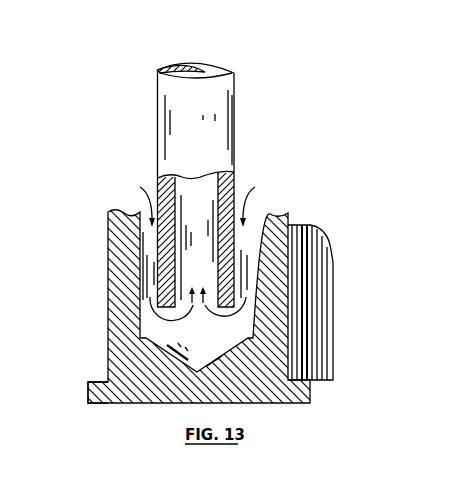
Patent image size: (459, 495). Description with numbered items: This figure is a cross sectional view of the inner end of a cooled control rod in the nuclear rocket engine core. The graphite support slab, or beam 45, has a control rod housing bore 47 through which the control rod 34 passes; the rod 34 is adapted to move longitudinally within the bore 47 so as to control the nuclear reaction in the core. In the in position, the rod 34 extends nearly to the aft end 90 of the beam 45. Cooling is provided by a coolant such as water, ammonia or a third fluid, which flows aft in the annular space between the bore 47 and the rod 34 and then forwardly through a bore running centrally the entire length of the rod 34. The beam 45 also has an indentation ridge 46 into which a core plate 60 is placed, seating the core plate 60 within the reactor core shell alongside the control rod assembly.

The control rod 34 is at (234, 80).
The graphite support slab 45 is at (120, 240).
The indentation ridge 46 is at (100, 381).
The control rod bore 47 is at (242, 240).
The core plate 60 is at (322, 367).
The aft end 90 is at (176, 344).